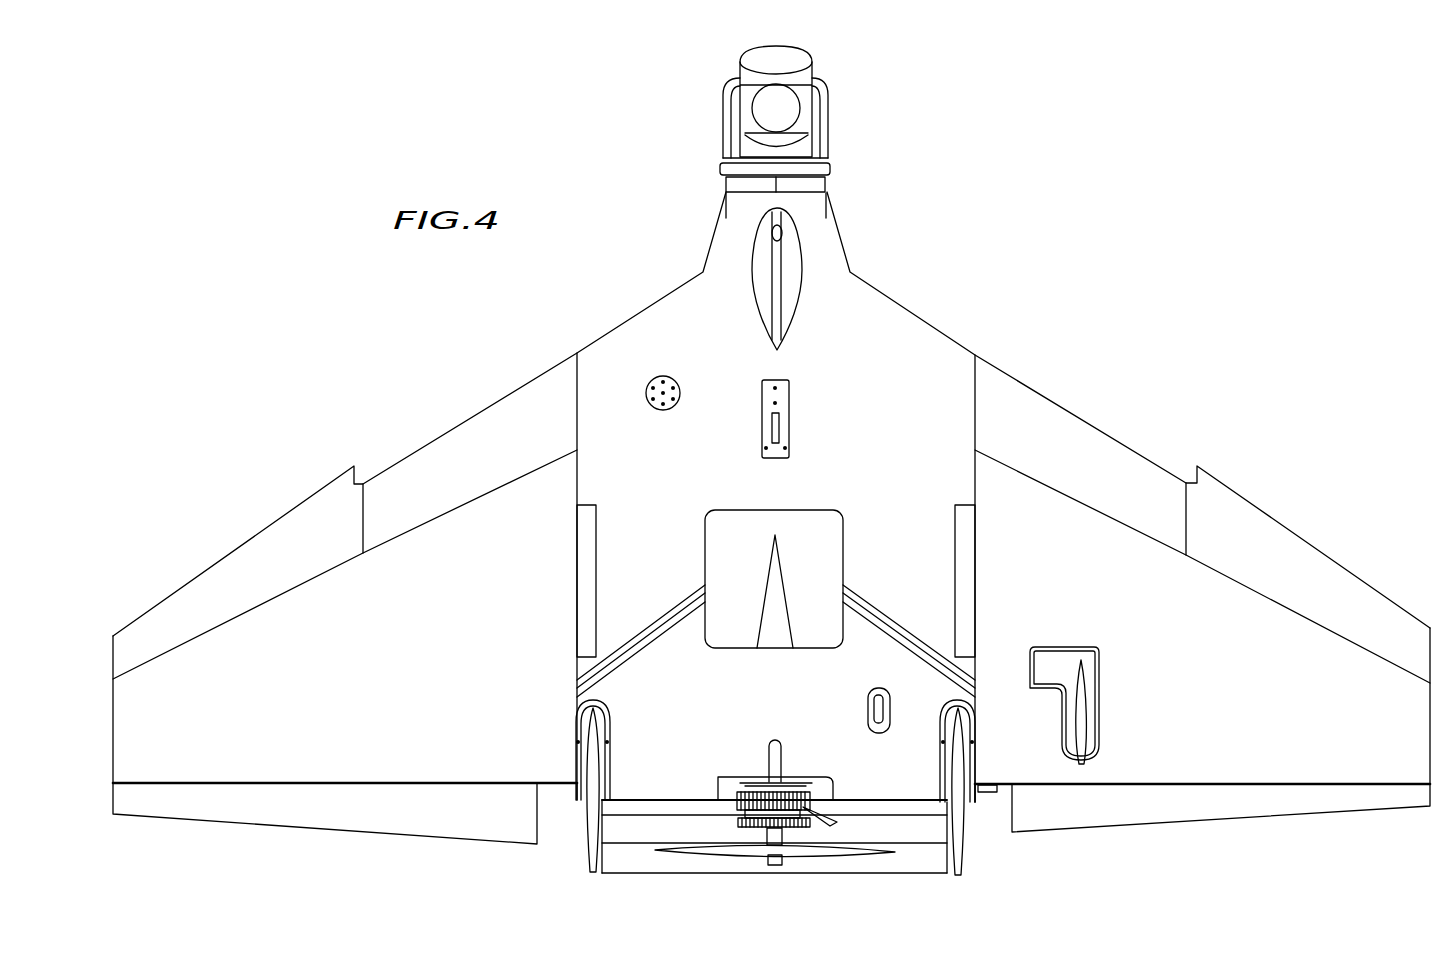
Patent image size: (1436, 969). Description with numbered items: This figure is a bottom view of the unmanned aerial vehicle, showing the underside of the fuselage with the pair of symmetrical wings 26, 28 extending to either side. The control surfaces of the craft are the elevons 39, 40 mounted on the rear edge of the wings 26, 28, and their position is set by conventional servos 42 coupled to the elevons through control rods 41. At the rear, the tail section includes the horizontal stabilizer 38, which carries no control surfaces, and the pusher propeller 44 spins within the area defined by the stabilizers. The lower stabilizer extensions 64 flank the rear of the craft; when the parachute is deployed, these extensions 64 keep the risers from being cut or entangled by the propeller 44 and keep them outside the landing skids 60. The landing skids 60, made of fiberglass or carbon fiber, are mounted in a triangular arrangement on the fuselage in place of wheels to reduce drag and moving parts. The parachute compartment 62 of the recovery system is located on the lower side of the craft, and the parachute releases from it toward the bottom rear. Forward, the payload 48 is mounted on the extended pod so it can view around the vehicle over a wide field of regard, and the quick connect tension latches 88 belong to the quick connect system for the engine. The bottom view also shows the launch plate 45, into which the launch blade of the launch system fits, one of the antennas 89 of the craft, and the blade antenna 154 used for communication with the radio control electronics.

The payload 48 is at (832, 107).
The quick connect tension latches 88 is at (830, 185).
The landing skids 60 is at (788, 284).
The antenna 89 is at (670, 380).
The launch plate 45 is at (790, 409).
The wing 28 is at (448, 449).
The wing 26 is at (1103, 452).
The parachute compartment 62 is at (823, 525).
The blade antenna 154 is at (868, 700).
The control rods 41 is at (1092, 758).
The elevon 39 is at (330, 818).
The elevon 40 is at (1222, 810).
The horizontal stabilizer 38 is at (683, 875).
The servos 42 is at (735, 795).
The pusher propeller 44 is at (822, 855).
The lower stabilizer extensions 64 is at (588, 807).